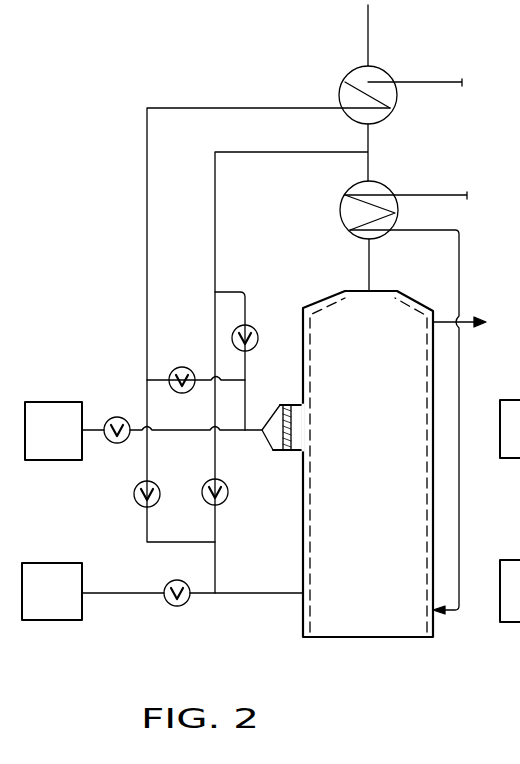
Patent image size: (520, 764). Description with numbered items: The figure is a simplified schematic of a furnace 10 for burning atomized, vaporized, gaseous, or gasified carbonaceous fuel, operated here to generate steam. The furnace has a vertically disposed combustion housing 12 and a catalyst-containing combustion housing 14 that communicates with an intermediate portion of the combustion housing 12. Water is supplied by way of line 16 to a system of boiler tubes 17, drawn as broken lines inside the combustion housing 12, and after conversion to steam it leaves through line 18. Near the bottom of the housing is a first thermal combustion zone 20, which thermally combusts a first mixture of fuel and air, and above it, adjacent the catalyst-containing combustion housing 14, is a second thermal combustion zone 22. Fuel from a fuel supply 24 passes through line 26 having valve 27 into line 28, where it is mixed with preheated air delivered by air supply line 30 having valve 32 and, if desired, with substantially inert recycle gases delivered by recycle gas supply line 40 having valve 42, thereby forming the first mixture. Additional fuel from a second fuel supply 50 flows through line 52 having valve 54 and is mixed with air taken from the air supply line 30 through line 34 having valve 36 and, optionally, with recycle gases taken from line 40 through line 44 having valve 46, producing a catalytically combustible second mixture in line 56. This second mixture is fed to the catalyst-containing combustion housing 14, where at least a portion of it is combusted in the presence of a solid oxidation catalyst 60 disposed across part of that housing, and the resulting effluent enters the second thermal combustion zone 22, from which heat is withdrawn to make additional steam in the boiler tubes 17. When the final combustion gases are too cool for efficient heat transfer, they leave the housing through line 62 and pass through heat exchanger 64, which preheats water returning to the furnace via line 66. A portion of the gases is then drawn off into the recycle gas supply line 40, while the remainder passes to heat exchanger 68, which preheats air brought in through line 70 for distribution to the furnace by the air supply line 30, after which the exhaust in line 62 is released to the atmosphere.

The furnace 10 is at (422, 650).
The combustion housing 12 is at (303, 533).
The catalyst-containing combustion housing 14 is at (274, 403).
The line 16 is at (460, 505).
The boiler tubes 17 is at (321, 300).
The line 18 is at (463, 318).
The first thermal combustion zone 20 is at (349, 617).
The second thermal combustion zone 22 is at (346, 437).
The fuel supply 24 is at (54, 562).
The line 26 is at (117, 596).
The valve 27 is at (176, 607).
The line 28 is at (223, 597).
The air supply line 30 is at (145, 262).
The valve 32 is at (133, 496).
The line 34 is at (159, 376).
The valve 36 is at (181, 396).
The recycle gas supply line 40 is at (217, 245).
The valve 42 is at (206, 506).
The line 44 is at (233, 291).
The valve 46 is at (254, 331).
The fuel supply 50 is at (58, 400).
The line 52 is at (97, 420).
The valve 54 is at (123, 415).
The line 56 is at (256, 437).
The solid oxidation catalyst 60 is at (276, 457).
The line 62 is at (366, 28).
The heat exchanger 64 is at (340, 210).
The line 66 is at (432, 193).
The heat exchanger 68 is at (342, 76).
The line 70 is at (443, 80).